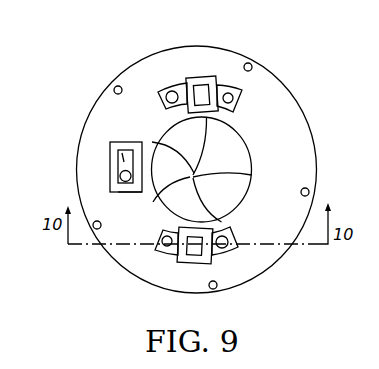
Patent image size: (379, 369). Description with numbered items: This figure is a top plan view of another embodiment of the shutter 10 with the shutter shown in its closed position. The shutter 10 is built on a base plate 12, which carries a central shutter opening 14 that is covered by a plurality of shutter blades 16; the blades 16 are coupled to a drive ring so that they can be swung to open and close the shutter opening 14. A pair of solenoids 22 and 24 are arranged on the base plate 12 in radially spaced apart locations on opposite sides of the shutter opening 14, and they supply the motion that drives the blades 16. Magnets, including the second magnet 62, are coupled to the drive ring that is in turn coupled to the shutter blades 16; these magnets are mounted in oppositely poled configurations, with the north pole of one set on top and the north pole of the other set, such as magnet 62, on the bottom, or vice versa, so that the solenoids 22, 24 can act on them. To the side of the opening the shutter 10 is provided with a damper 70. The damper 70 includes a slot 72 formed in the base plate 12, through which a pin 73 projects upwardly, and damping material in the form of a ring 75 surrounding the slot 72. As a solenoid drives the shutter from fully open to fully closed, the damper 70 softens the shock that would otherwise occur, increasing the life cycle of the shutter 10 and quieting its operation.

The shutter 10 is at (293, 69).
The base plate 12 is at (293, 118).
The shutter opening 14 is at (226, 169).
The shutter blades 16 is at (180, 141).
The solenoid 22 is at (201, 89).
The solenoid 24 is at (227, 271).
The second magnet 62 is at (226, 256).
The damper 70 is at (91, 157).
The slot 72 is at (111, 142).
The pin 73 is at (120, 180).
The ring 75 is at (127, 193).